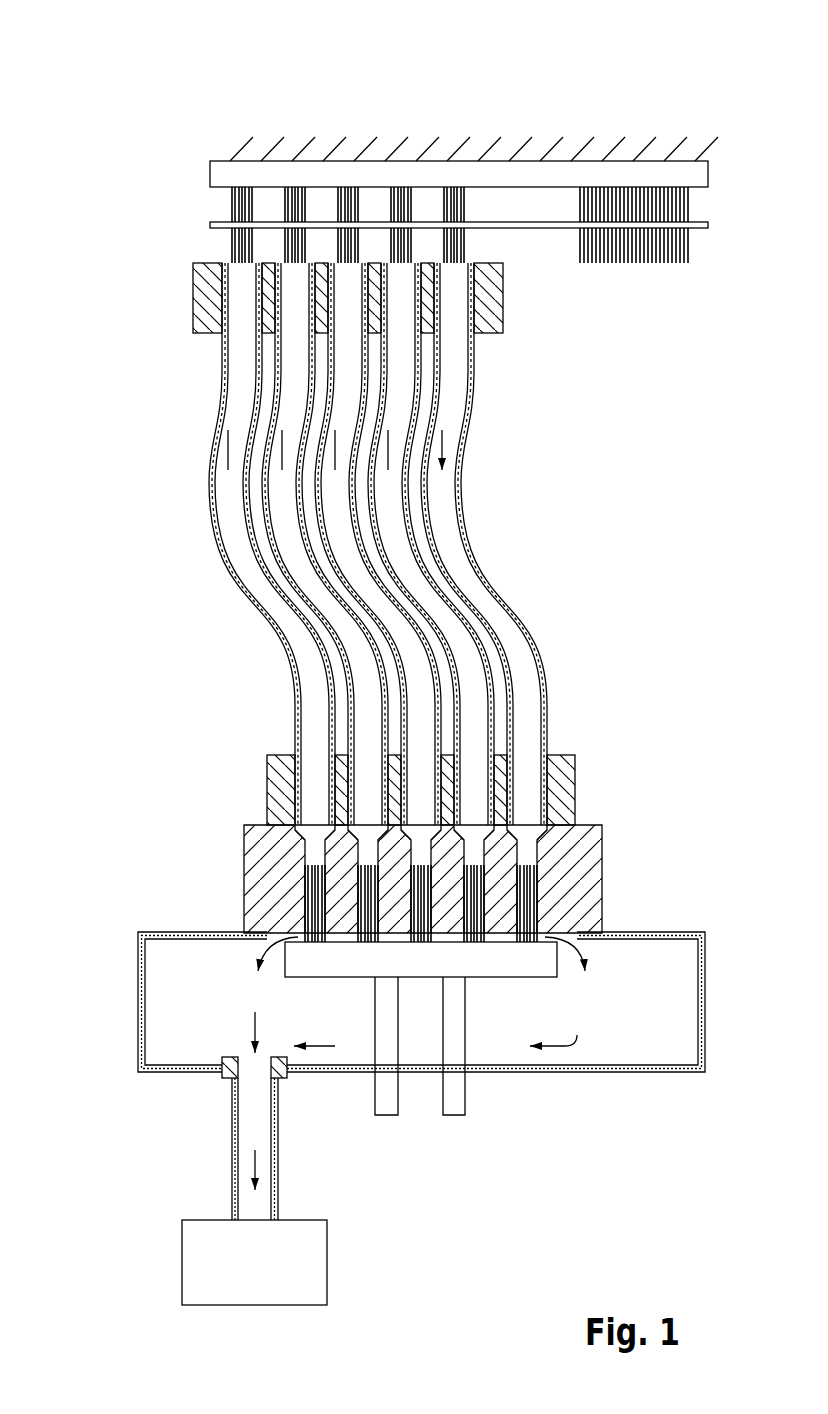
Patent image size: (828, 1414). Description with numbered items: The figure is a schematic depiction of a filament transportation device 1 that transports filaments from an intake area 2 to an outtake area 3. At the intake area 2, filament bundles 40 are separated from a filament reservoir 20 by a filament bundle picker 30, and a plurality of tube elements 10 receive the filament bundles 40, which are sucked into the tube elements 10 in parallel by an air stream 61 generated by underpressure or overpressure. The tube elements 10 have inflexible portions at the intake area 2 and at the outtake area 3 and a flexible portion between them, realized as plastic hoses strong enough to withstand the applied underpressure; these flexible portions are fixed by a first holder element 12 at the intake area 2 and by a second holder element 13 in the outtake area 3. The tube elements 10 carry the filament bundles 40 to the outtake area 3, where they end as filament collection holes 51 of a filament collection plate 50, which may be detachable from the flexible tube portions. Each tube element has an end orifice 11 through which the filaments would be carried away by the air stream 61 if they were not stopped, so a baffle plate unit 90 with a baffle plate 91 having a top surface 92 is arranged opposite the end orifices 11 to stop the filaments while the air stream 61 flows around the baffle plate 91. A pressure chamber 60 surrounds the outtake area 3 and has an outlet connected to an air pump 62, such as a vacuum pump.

The filament transportation device 1 is at (135, 112).
The intake area 2 is at (175, 223).
The outtake area 3 is at (176, 868).
The tube elements 10 is at (293, 585).
The end orifice 11 is at (512, 940).
The first holder element 12 is at (208, 296).
The second holder element 13 is at (283, 790).
The filament reservoir 20 is at (647, 282).
The filament bundle picker 30 is at (544, 212).
The filament bundles 40 is at (252, 198).
The filament collection plate 50 is at (573, 873).
The filament collection holes 51 is at (527, 843).
The pressure chamber 60 is at (138, 1000).
The air stream 61 is at (443, 450).
The air pump 62 is at (166, 1255).
The baffle plate unit 90 is at (360, 990).
The baffle plate 91 is at (533, 965).
The top surface 92 is at (345, 941).